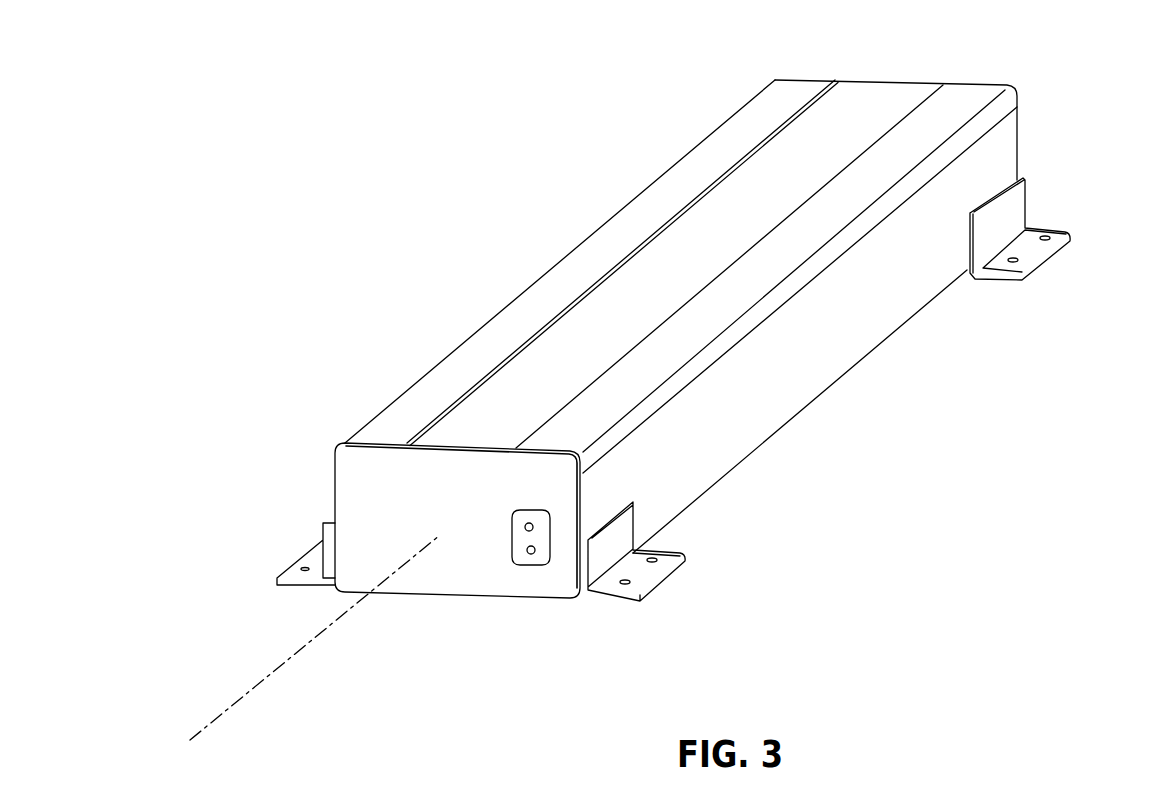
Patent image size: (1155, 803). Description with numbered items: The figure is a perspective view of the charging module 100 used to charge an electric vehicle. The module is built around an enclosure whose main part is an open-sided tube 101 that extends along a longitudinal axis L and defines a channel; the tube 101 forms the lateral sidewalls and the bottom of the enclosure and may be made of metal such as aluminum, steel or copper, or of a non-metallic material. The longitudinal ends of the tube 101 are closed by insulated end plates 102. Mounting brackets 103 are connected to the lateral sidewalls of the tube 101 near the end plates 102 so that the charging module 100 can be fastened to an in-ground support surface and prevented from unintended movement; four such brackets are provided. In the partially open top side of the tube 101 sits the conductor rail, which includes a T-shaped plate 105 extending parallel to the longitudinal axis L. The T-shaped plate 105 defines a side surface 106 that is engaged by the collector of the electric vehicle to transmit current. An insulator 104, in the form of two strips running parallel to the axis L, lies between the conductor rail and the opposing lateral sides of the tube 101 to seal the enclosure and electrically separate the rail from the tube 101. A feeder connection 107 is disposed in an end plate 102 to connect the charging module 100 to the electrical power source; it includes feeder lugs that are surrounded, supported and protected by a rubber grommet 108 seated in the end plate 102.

The charging module 100 is at (392, 192).
The open-sided tube 101 is at (853, 337).
The insulated end plate 102 is at (346, 456).
The mounting bracket 103 is at (311, 560).
The insulator 104 is at (716, 152).
The T-shaped plate 105 is at (852, 103).
The side surface 106 is at (664, 296).
The feeder connection 107 is at (526, 506).
The rubber grommet 108 is at (522, 558).
The longitudinal axis L is at (256, 686).